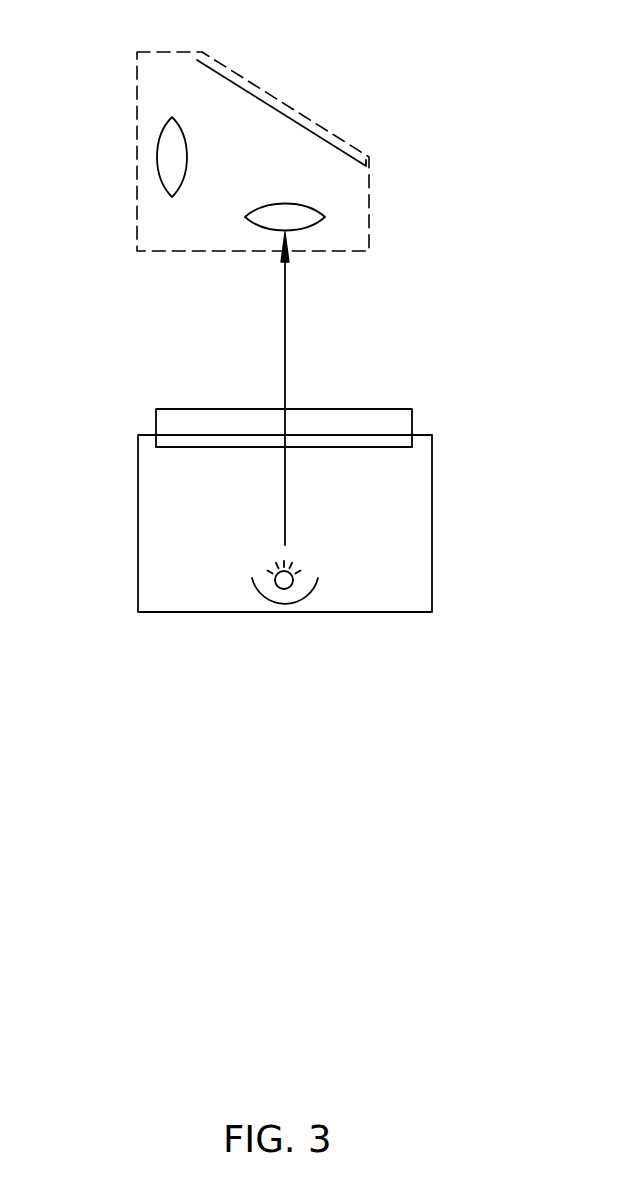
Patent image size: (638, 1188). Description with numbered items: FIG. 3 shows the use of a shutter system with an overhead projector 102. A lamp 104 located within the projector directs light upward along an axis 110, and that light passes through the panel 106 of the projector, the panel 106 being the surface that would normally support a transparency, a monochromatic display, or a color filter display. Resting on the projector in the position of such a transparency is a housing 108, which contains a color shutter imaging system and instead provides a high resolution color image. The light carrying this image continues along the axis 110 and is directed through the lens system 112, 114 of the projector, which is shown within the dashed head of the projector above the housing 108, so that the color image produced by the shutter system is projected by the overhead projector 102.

The overhead projector 102 is at (432, 523).
The lamp 104 is at (295, 583).
The panel 106 is at (388, 447).
The housing 108 is at (398, 409).
The axis 110 is at (285, 310).
The lens system 112 is at (302, 205).
The lens system 114 is at (158, 172).